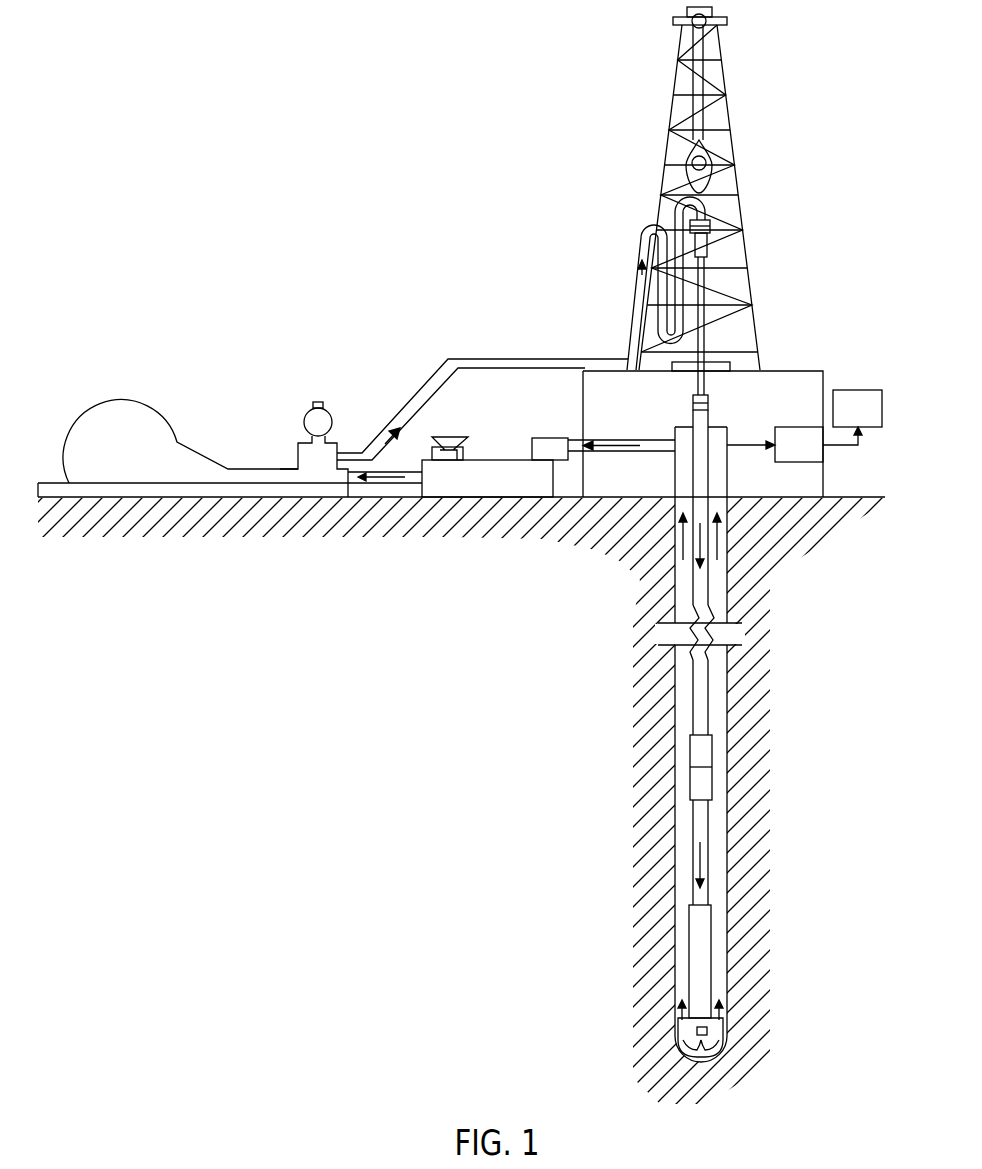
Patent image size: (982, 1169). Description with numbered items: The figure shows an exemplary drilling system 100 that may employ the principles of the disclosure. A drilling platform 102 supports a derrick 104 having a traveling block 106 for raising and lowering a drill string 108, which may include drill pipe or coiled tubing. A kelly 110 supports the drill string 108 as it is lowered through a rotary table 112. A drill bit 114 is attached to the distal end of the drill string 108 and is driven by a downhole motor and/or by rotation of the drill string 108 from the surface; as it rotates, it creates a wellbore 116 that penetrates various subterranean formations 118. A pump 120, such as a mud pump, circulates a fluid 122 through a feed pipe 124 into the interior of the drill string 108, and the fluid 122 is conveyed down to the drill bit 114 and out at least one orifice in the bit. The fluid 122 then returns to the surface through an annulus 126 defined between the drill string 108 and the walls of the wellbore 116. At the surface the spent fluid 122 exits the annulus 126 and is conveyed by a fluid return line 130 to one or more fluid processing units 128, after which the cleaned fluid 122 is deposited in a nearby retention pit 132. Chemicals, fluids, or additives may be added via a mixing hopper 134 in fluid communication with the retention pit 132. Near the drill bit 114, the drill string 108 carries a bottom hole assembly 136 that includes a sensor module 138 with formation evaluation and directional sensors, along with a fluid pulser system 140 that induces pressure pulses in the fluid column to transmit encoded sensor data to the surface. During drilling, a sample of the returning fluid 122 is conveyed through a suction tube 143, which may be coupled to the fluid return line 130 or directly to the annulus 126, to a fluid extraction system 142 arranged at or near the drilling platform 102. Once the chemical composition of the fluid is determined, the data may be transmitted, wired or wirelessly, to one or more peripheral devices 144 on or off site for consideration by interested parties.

The drilling system 100 is at (418, 94).
The drilling platform 102 is at (828, 387).
The derrick 104 is at (730, 110).
The traveling block 106 is at (712, 150).
The drill string 108 is at (698, 608).
The kelly 110 is at (703, 277).
The rotary table 112 is at (725, 366).
The drill bit 114 is at (712, 1037).
The wellbore 116 is at (729, 697).
The subterranean formations 118 is at (532, 733).
The pump 120 is at (135, 463).
The fluid 122 is at (358, 456).
The feed pipe 124 is at (460, 362).
The annulus 126 is at (715, 857).
The fluid processing unit 128 is at (545, 442).
The fluid return line 130 is at (657, 453).
The retention pit 132 is at (468, 490).
The mixing hopper 134 is at (440, 455).
The bottom hole assembly 136 is at (627, 738).
The sensor module 138 is at (705, 897).
The fluid pulser system 140 is at (705, 757).
The fluid extraction system 142 is at (783, 457).
The suction tube 143 is at (742, 443).
The peripheral device 144 is at (845, 420).